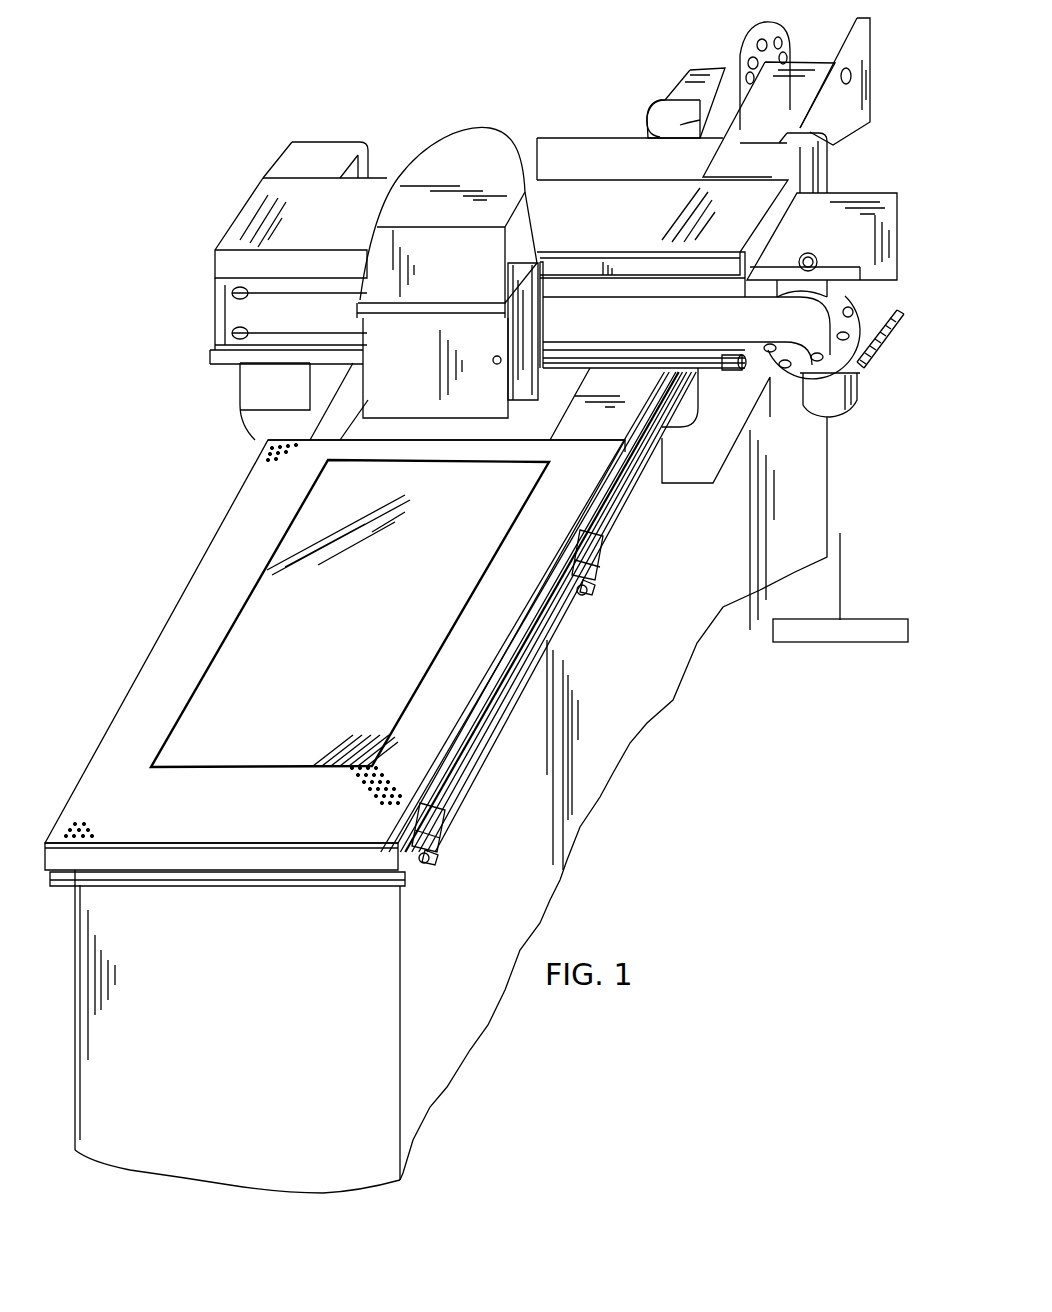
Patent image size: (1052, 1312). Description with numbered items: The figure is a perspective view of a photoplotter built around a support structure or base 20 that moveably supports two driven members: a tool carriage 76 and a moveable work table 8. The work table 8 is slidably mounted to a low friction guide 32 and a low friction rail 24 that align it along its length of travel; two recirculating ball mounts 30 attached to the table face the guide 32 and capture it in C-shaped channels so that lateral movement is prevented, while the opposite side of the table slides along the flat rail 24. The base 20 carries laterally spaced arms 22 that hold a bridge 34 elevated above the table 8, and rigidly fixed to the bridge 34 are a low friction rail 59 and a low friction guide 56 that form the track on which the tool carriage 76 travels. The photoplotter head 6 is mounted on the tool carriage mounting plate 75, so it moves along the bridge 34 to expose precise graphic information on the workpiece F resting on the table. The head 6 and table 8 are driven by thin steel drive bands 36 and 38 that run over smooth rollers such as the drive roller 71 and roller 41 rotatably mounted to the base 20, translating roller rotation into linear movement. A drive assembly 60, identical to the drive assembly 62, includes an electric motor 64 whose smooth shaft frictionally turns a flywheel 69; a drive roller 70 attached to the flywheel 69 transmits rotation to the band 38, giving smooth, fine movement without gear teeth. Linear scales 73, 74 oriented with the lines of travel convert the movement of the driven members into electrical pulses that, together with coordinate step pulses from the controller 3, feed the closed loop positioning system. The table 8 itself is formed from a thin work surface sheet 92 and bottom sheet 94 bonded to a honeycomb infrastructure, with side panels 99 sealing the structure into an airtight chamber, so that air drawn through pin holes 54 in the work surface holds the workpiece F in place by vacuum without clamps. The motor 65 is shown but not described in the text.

The controller 3 is at (850, 622).
The photoplotter head 6 is at (372, 294).
The work table 8 is at (553, 598).
The base 20 is at (657, 705).
The arms 22 is at (328, 142).
The low friction rail 24 is at (334, 415).
The recirculating ball mounts 30 is at (604, 555).
The low friction guide 32 is at (632, 477).
The bridge 34 is at (388, 186).
The drive band 36 is at (683, 328).
The drive band 38 is at (597, 432).
The roller 41 is at (262, 290).
The pin holes 54 is at (72, 826).
The low friction guide 56 is at (722, 370).
The low friction rail 59 is at (322, 265).
The drive assembly 60 is at (802, 48).
The drive assembly 62 is at (880, 363).
The electric motor 64 is at (658, 110).
The drive motor 65 is at (837, 410).
The flywheel 69 is at (750, 62).
The drive roller 70 is at (818, 104).
The drive roller 71 is at (790, 288).
The linear scale 73 is at (492, 438).
The linear scale 74 is at (606, 345).
The tool carriage mounting plate 75 is at (530, 388).
The tool carriage 76 is at (566, 274).
The work surface sheet 92 is at (163, 645).
The table bottom sheet 94 is at (473, 745).
The side panels 99 is at (285, 868).
The workpiece F is at (448, 640).